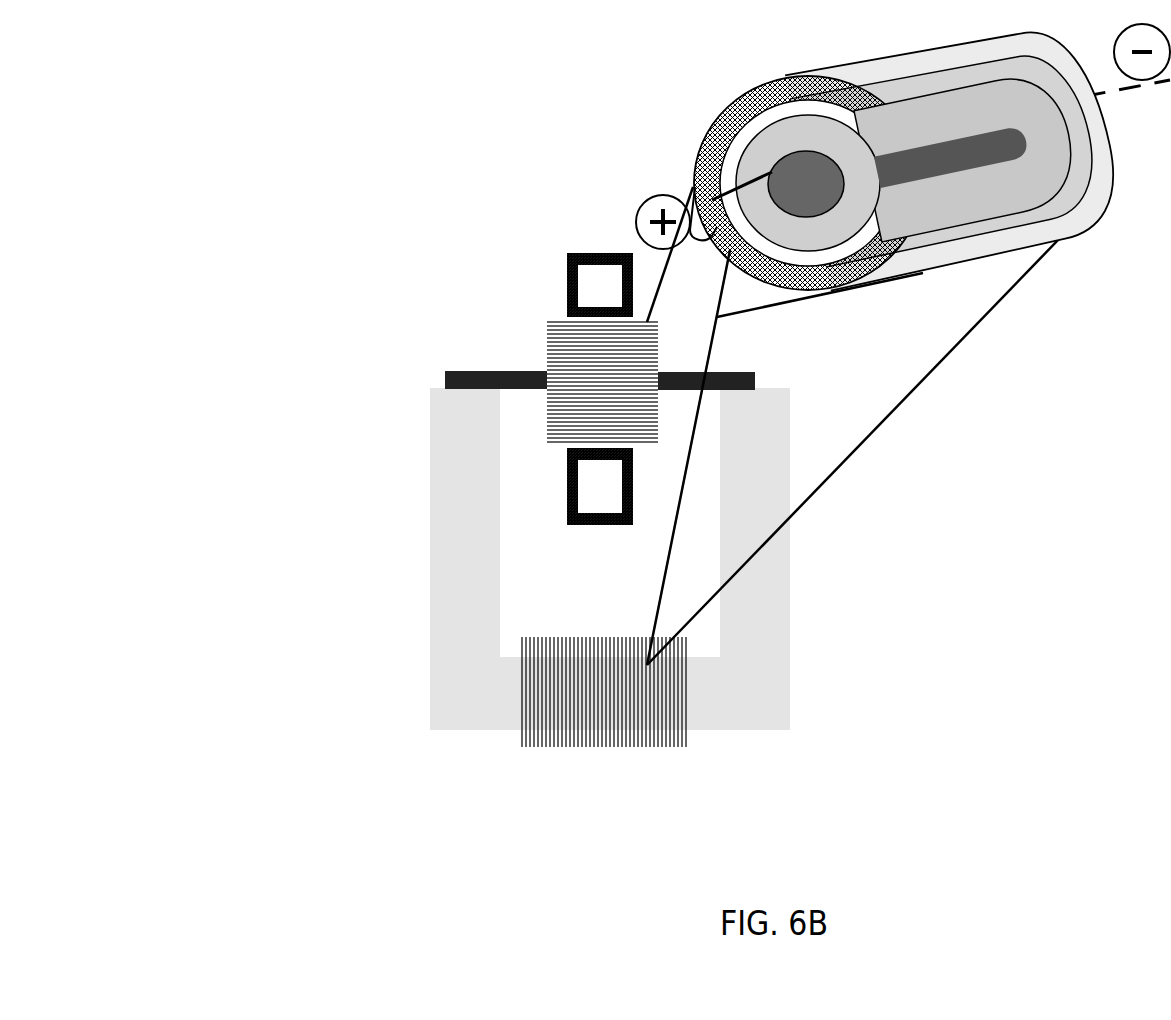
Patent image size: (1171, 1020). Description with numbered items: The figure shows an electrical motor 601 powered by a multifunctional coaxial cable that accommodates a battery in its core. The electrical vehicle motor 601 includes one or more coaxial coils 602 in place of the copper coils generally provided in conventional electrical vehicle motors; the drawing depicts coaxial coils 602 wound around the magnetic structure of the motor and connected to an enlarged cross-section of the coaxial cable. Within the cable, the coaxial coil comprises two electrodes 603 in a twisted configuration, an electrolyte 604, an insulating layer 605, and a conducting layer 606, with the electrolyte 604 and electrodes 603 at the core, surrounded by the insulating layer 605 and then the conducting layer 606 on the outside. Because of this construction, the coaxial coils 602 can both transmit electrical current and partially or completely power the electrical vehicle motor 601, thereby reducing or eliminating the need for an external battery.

The electrical motor 601 is at (342, 357).
The coaxial coils 602 is at (618, 397).
The electrodes 603 is at (1005, 125).
The electrolyte 604 is at (775, 222).
The insulating layer 605 is at (725, 180).
The conducting layer 606 is at (748, 94).